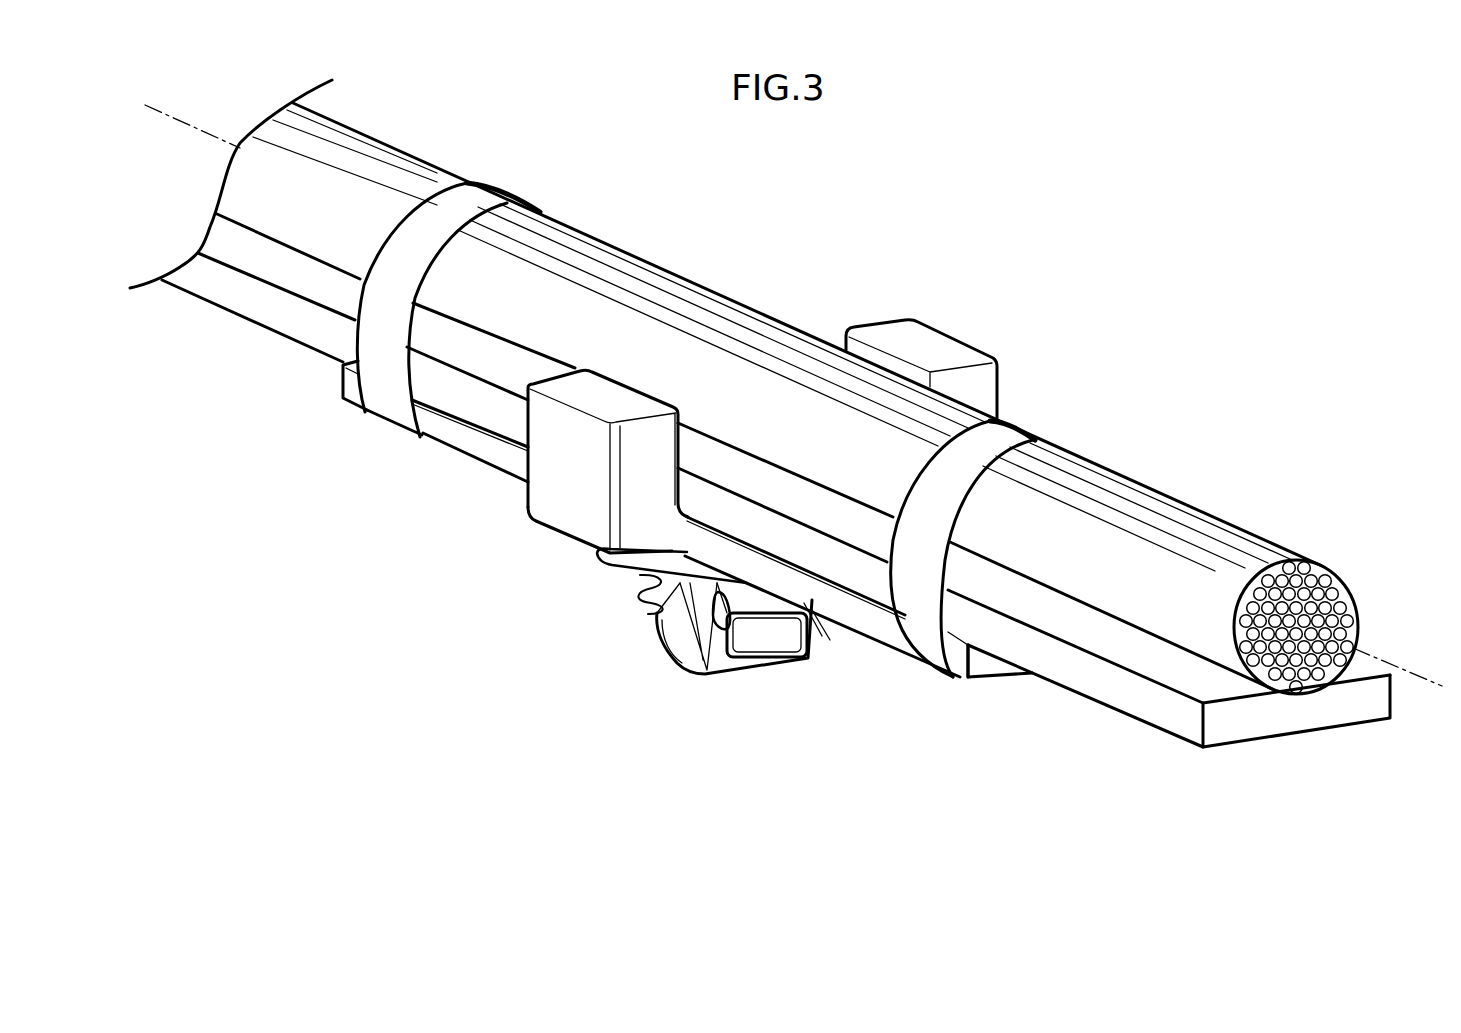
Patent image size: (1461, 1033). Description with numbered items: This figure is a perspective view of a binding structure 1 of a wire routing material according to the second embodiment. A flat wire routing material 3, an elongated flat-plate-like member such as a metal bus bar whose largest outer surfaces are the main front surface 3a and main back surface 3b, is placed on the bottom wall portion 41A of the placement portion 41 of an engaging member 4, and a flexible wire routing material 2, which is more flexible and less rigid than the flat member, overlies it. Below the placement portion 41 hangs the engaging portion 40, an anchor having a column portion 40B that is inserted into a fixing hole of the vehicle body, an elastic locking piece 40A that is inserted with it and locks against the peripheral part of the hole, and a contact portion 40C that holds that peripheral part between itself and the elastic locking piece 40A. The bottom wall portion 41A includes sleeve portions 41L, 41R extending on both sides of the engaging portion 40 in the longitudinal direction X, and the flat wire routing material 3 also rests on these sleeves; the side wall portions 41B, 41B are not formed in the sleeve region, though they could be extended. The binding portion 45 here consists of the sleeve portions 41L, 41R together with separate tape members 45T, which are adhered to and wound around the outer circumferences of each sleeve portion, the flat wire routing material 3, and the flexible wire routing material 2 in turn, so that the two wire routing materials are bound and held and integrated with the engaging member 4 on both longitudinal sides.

The binding structure of a wire routing material 1 is at (1132, 219).
The flexible wire routing material 2 is at (1190, 500).
The flat wire routing material 3 is at (1272, 754).
The main front surface 3a is at (1173, 670).
The main back surface 3b is at (1153, 727).
The engaging member 4 is at (655, 668).
The engaging portion 40 is at (716, 686).
The elastic locking piece 40A is at (668, 590).
The column portion 40B is at (753, 612).
The contact portion 40C is at (640, 580).
The placement portion 41 is at (522, 490).
The bottom wall portion 41A is at (657, 590).
The side wall portion 41B is at (635, 513).
The sleeve portion 41L is at (448, 427).
The sleeve portion 41R is at (872, 618).
The binding portion 45 is at (946, 690).
The tape member 45T is at (498, 190).
The longitudinal direction X is at (1385, 657).